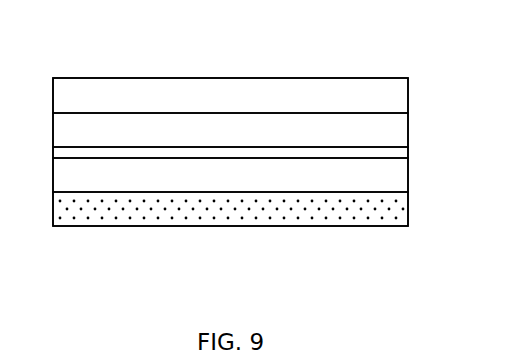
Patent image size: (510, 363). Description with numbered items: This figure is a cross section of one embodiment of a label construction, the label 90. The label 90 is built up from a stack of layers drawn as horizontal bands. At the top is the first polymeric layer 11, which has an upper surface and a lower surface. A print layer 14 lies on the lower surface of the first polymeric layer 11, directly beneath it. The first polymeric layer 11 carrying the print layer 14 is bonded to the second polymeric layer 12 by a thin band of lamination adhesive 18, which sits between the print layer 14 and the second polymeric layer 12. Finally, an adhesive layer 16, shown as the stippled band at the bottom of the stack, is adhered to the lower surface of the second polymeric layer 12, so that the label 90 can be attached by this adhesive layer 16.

The label 90 is at (108, 63).
The first polymeric layer 11 is at (387, 102).
The print layer 14 is at (387, 122).
The lamination adhesive 18 is at (375, 157).
The second polymeric layer 12 is at (397, 167).
The adhesive layer 16 is at (397, 212).